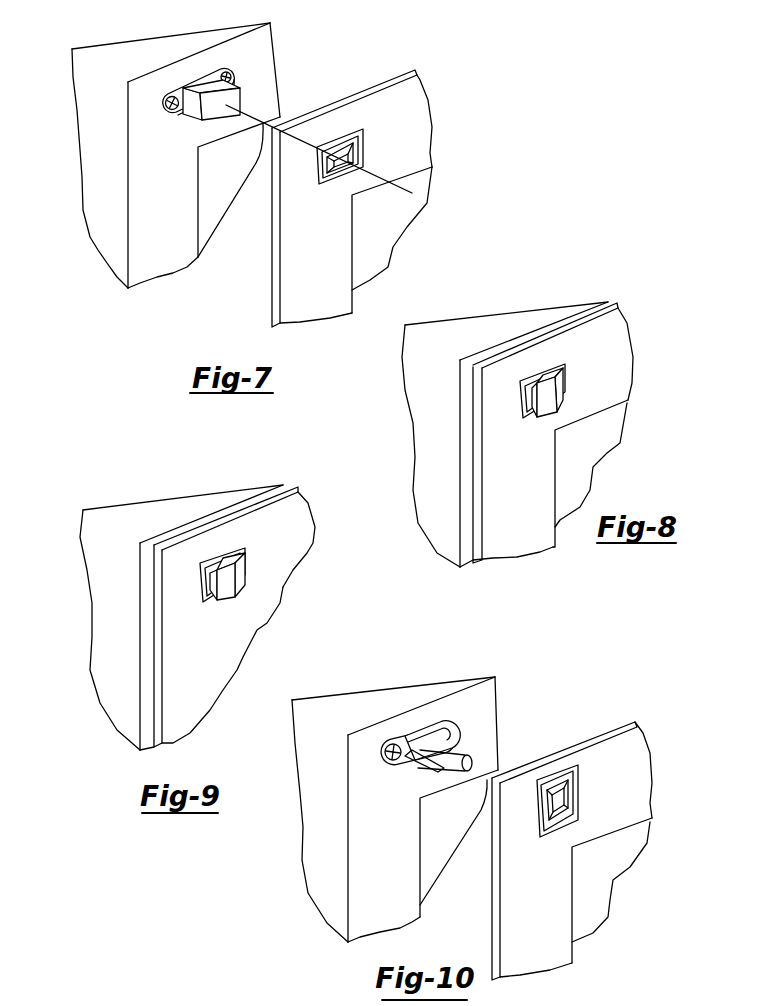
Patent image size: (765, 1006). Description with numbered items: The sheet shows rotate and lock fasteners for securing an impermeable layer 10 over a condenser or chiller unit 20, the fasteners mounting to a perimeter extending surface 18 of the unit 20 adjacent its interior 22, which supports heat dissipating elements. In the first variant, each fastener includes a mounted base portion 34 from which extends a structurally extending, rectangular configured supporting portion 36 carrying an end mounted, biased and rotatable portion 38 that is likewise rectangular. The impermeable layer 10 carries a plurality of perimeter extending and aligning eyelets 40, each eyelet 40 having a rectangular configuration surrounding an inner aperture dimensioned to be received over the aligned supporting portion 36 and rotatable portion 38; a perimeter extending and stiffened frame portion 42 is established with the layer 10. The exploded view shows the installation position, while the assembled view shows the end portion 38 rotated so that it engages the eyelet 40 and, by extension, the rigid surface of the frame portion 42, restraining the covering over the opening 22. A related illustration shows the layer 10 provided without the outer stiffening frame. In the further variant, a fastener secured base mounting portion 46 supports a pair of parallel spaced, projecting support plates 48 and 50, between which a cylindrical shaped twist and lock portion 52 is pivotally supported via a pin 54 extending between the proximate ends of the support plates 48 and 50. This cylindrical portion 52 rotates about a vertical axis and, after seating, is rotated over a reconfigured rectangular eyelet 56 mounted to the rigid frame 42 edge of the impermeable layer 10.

In FIG. 7, the impermeable layer 10 is at (385, 230).
In FIG. 8, the impermeable layer 10 is at (600, 453).
In FIG. 9, the impermeable layer 10 is at (260, 627).
In FIG. 10, the impermeable layer 10 is at (608, 875).
In FIG. 7, the perimeter extending surface 18 is at (187, 257).
In FIG. 8, the perimeter extending surface 18 is at (467, 498).
In FIG. 9, the perimeter extending surface 18 is at (150, 647).
In FIG. 10, the perimeter extending surface 18 is at (405, 830).
In FIG. 7, the condenser or chiller unit 20 is at (95, 153).
In FIG. 8, the condenser or chiller unit 20 is at (418, 408).
In FIG. 9, the condenser or chiller unit 20 is at (108, 608).
In FIG. 10, the condenser or chiller unit 20 is at (308, 841).
In FIG. 7, the interior 22 is at (215, 212).
In FIG. 10, the interior 22 is at (433, 866).
In FIG. 7, the mounted base portion 34 is at (177, 80).
In FIG. 7, the supporting portion 36 is at (202, 82).
In FIG. 8, the supporting portion 36 is at (534, 400).
In FIG. 9, the supporting portion 36 is at (213, 585).
In FIG. 7, the rotatable portion 38 is at (227, 88).
In FIG. 8, the rotatable portion 38 is at (562, 403).
In FIG. 9, the rotatable portion 38 is at (242, 583).
In FIG. 7, the eyelet 40 is at (360, 143).
In FIG. 8, the eyelet 40 is at (563, 370).
In FIG. 9, the eyelet 40 is at (243, 557).
In FIG. 7, the frame portion 42 is at (417, 122).
In FIG. 8, the frame portion 42 is at (623, 343).
In FIG. 9, the frame portion 42 is at (298, 515).
In FIG. 10, the frame portion 42 is at (637, 796).
In FIG. 10, the base mounting portion 46 is at (395, 738).
In FIG. 10, the support plate 48 is at (427, 733).
In FIG. 10, the support plate 50 is at (412, 762).
In FIG. 10, the twist and lock portion 52 is at (462, 755).
In FIG. 10, the pin 54 is at (447, 740).
In FIG. 10, the eyelet 56 is at (575, 798).